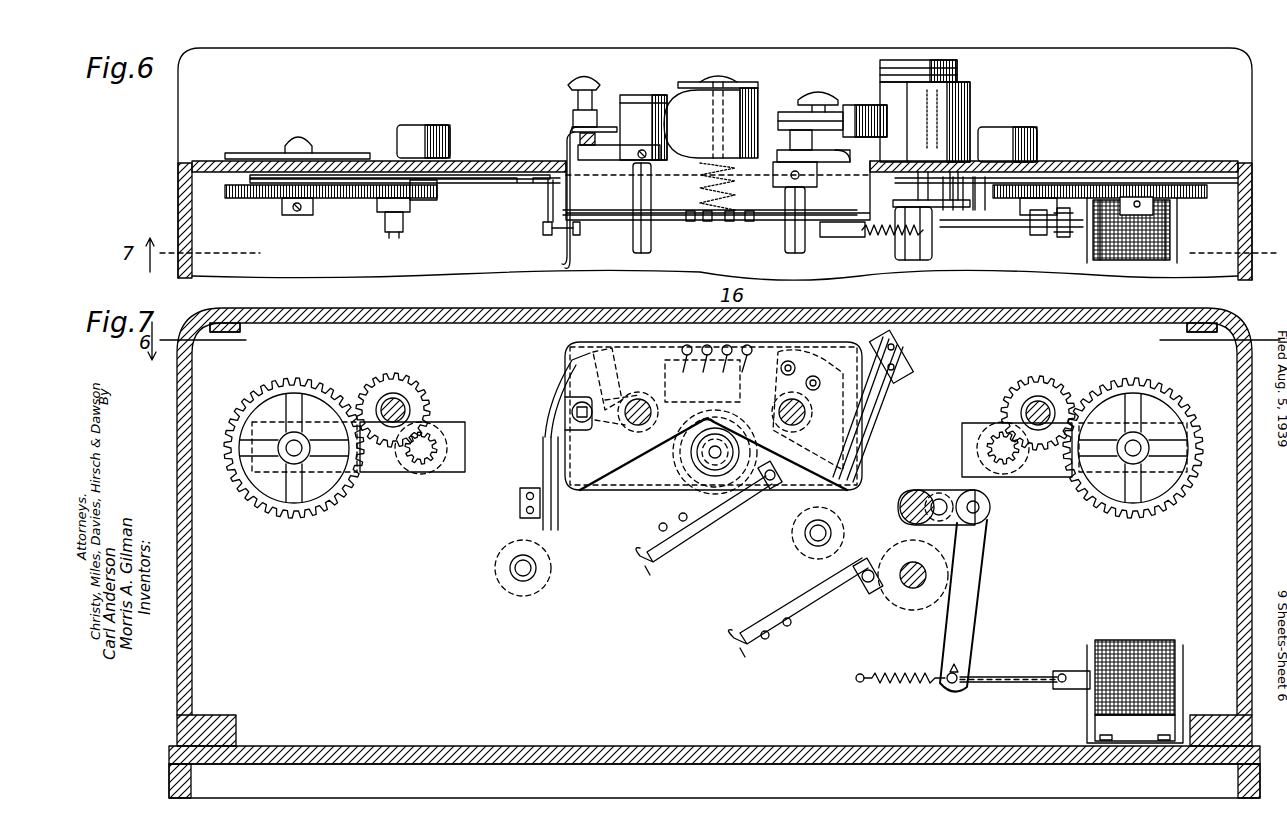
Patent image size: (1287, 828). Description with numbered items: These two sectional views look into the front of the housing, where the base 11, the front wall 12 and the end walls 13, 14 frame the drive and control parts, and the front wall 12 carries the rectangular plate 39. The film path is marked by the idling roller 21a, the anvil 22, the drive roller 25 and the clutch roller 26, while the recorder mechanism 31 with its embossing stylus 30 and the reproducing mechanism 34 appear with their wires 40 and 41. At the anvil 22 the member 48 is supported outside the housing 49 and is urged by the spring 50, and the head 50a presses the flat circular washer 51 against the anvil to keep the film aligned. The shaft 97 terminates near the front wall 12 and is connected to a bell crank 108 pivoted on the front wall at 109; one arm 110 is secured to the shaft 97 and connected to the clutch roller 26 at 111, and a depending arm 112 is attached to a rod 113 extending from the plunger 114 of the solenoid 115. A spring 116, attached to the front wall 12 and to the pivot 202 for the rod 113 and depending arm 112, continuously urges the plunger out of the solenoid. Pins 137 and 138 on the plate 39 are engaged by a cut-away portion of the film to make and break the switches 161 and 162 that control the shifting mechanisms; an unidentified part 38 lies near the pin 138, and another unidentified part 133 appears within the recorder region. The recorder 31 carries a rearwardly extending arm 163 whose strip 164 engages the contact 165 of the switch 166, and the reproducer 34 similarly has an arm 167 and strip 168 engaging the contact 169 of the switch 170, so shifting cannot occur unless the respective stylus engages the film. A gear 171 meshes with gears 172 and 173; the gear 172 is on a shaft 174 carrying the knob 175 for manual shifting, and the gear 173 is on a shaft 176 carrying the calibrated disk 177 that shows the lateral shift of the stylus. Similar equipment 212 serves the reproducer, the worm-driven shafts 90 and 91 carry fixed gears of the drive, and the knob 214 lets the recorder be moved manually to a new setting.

In FIG. 6, the base 11 is at (489, 60).
In FIG. 7, the base 11 is at (683, 746).
In FIG. 6, the front wall 12 is at (505, 185).
In FIG. 7, the front wall 12 is at (443, 660).
In FIG. 6, the end wall 13 is at (205, 228).
In FIG. 7, the end wall 13 is at (192, 528).
In FIG. 6, the end wall 14 is at (1240, 222).
In FIG. 7, the end wall 14 is at (1237, 544).
In FIG. 7, the idling roller 21a is at (535, 595).
In FIG. 6, the anvil 22 is at (748, 116).
In FIG. 7, the anvil 22 is at (717, 524).
In FIG. 6, the drive roller 25 is at (960, 76).
In FIG. 7, the drive roller 25 is at (900, 610).
In FIG. 6, the clutch roller 26 is at (972, 100).
In FIG. 7, the clutch roller 26 is at (915, 540).
In FIG. 6, the embossing stylus 30 is at (718, 190).
In FIG. 7, the embossing stylus 30 is at (722, 415).
In FIG. 6, the recorder mechanism 31 is at (736, 94).
In FIG. 6, the reproducing mechanism 34 is at (843, 105).
In FIG. 7, the arm 38 is at (847, 614).
In FIG. 6, the rectangular plate 39 is at (498, 163).
In FIG. 6, the wires 40 is at (690, 222).
In FIG. 7, the wires 40 is at (702, 373).
In FIG. 6, the wires 41 is at (750, 222).
In FIG. 7, the wires 41 is at (731, 368).
In FIG. 7, the member 48 is at (693, 467).
In FIG. 6, the housing 49 is at (610, 217).
In FIG. 6, the spring 50 is at (738, 198).
In FIG. 6, the head of bolt 50a is at (705, 82).
In FIG. 6, the flat circular washer 51 is at (672, 95).
In FIG. 6, the shaft 90 is at (1035, 238).
In FIG. 7, the shaft 90 is at (1040, 405).
In FIG. 6, the shaft 91 is at (392, 238).
In FIG. 7, the shaft 91 is at (394, 405).
In FIG. 6, the shaft 97 is at (917, 260).
In FIG. 7, the shaft 97 is at (908, 490).
In FIG. 7, the bell crank 108 is at (993, 551).
In FIG. 6, the pivot 109 is at (1020, 207).
In FIG. 7, the pivot 109 is at (990, 508).
In FIG. 6, the arm of bell crank 110 is at (980, 228).
In FIG. 7, the arm of bell crank 110 is at (938, 498).
In FIG. 6, the connection to clutch roller 111 is at (938, 172).
In FIG. 7, the connection to clutch roller 111 is at (941, 498).
In FIG. 7, the depending arm 112 is at (977, 627).
In FIG. 6, the rod 113 is at (1030, 228).
In FIG. 7, the rod 113 is at (998, 676).
In FIG. 6, the plunger 114 is at (1058, 235).
In FIG. 7, the plunger 114 is at (1057, 671).
In FIG. 6, the solenoid 115 is at (1162, 262).
In FIG. 7, the solenoid 115 is at (1140, 645).
In FIG. 6, the spring 116 is at (886, 238).
In FIG. 7, the spring 116 is at (900, 666).
In FIG. 6, the rod 133 is at (650, 250).
In FIG. 7, the rod 133 is at (640, 400).
In FIG. 7, the pin 137 is at (770, 488).
In FIG. 7, the pin 138 is at (860, 575).
In FIG. 7, the switch 161 is at (673, 518).
In FIG. 7, the switch 162 is at (818, 601).
In FIG. 6, the rearwardly extending arm 163 is at (598, 128).
In FIG. 7, the rearwardly extending arm 163 is at (572, 430).
In FIG. 6, the strip 164 is at (580, 245).
In FIG. 7, the strip 164 is at (570, 430).
In FIG. 7, the contact 165 is at (543, 462).
In FIG. 6, the switch 166 is at (540, 232).
In FIG. 7, the switch 166 is at (517, 508).
In FIG. 6, the arm 167 is at (830, 250).
In FIG. 7, the strip 168 is at (836, 480).
In FIG. 7, the contact 169 is at (848, 478).
In FIG. 7, the switch 170 is at (912, 377).
In FIG. 6, the gear 171 is at (362, 199).
In FIG. 7, the gear 171 is at (423, 392).
In FIG. 6, the gear 172 is at (418, 212).
In FIG. 7, the gear 172 is at (429, 443).
In FIG. 6, the gear 173 is at (262, 200).
In FIG. 7, the gear 173 is at (312, 383).
In FIG. 6, the shaft 174 is at (437, 190).
In FIG. 7, the shaft 174 is at (423, 472).
In FIG. 6, the knob 175 is at (452, 133).
In FIG. 7, the knob 175 is at (465, 443).
In FIG. 6, the shaft 176 is at (298, 216).
In FIG. 7, the shaft 176 is at (294, 457).
In FIG. 6, the calibrated disk 177 is at (335, 153).
In FIG. 6, the pivot 202 is at (963, 215).
In FIG. 7, the pivot 202 is at (953, 688).
In FIG. 7, the similar equipment 212 is at (1116, 528).
In FIG. 6, the knob 214 is at (1000, 128).